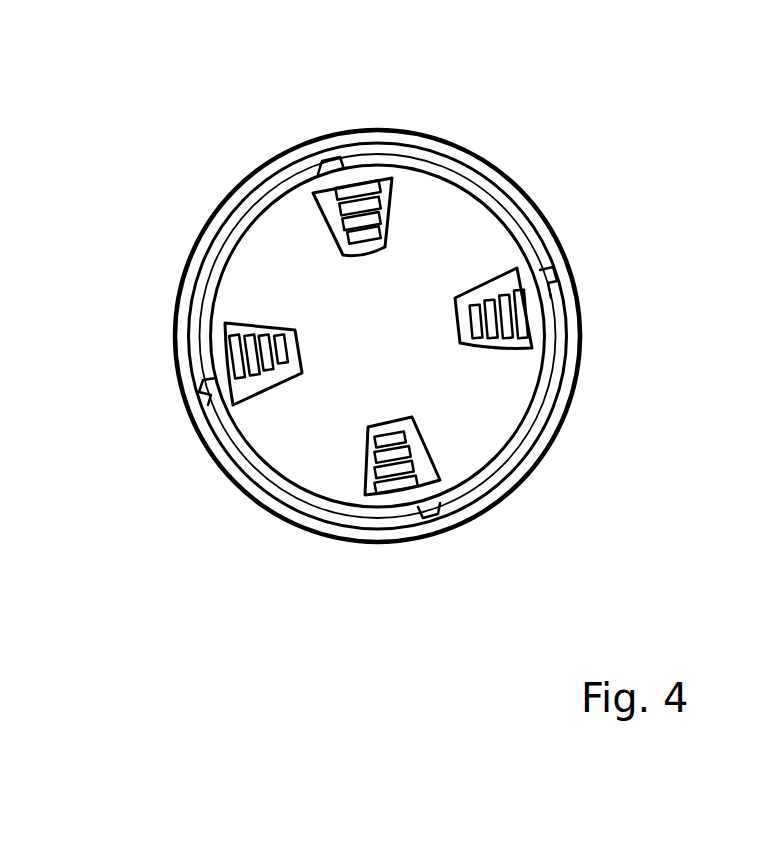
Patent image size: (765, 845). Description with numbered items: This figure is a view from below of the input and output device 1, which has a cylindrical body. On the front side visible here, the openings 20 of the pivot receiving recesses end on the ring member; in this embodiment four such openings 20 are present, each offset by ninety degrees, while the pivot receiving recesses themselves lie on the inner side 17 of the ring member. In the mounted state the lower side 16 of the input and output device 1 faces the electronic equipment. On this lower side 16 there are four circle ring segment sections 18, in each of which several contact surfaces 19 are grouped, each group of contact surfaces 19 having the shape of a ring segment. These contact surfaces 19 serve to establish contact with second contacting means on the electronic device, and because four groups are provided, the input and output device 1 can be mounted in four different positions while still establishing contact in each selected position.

The input and output device 1 is at (513, 163).
The lower side 16 is at (478, 418).
The inner side 17 is at (510, 232).
The circle ring segment sections 18 is at (323, 207).
The contact surfaces 19 is at (372, 236).
The openings 20 is at (322, 195).